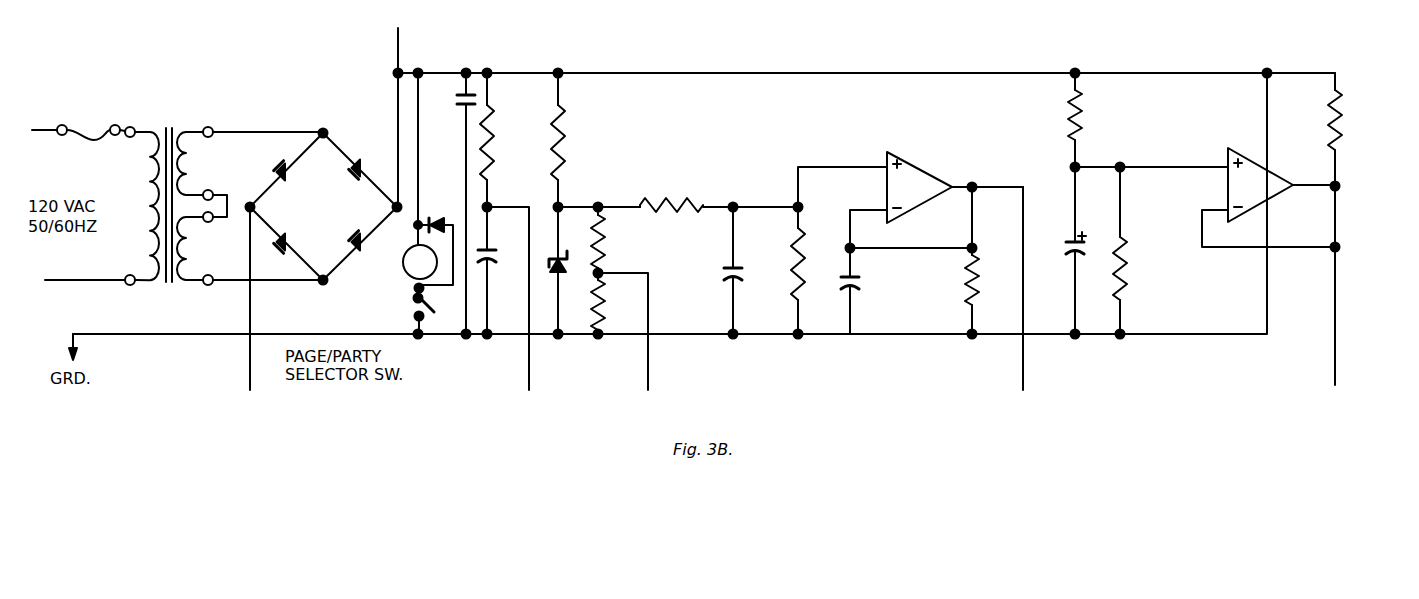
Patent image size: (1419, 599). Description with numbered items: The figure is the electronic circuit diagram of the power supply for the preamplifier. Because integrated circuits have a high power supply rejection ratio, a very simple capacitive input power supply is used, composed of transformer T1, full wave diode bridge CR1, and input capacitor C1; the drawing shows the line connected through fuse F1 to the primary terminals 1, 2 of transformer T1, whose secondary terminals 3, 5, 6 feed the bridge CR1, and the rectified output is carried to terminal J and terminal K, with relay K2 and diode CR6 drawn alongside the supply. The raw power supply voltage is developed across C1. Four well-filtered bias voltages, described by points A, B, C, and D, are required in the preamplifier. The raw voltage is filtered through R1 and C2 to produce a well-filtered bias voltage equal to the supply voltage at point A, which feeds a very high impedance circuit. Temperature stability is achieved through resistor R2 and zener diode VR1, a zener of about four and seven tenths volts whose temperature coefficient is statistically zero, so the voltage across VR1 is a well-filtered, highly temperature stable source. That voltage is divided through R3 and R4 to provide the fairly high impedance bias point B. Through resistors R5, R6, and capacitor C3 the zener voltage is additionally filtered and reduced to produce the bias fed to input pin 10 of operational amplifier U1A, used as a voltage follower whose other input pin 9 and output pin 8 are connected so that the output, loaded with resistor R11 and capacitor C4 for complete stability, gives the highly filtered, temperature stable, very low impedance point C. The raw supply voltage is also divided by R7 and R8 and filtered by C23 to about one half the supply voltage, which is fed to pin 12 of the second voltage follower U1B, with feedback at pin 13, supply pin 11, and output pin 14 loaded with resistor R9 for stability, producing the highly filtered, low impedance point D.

The fuse 1/16A F1 is at (94, 119).
The transformer T1 is at (173, 196).
The transformer primary terminal 1 is at (130, 141).
The transformer primary terminal 2 is at (129, 271).
The transformer secondary terminal 3 is at (208, 122).
The transformer secondary terminal 5 is at (208, 230).
The transformer secondary terminal 6 is at (208, 271).
The full wave diode bridge CR1 is at (324, 207).
The diode CR6 is at (433, 243).
The relay coil and contacts K2 is at (393, 289).
The input capacitor C1 is at (451, 203).
The resistor R1 is at (501, 140).
The capacitor C2 is at (497, 270).
The resistor R2 is at (570, 140).
The zener diode VR1 is at (572, 270).
The resistor R3 is at (612, 240).
The resistor R4 is at (612, 303).
The resistor R5 is at (719, 194).
The capacitor C3 is at (717, 270).
The resistor R6 is at (810, 270).
The operational amplifier U1A is at (910, 196).
The op-amp U1A output pin 8 is at (987, 174).
The op-amp U1A inverting input pin 9 is at (868, 229).
The input pin 10 is at (842, 176).
The capacitor C4 is at (864, 291).
The resistor R11 is at (956, 291).
The resistor R7 is at (1088, 120).
The capacitor C23 is at (1059, 250).
The resistor R8 is at (1132, 250).
The voltage follower U1B is at (1267, 197).
The op-amp U1B supply pin 11 is at (1278, 208).
The op-amp U1B non-inverting input pin 12 is at (1214, 157).
The op-amp U1B inverting input pin 13 is at (1268, 219).
The op-amp U1B output pin 14 is at (1312, 174).
The resistor R9 is at (1318, 129).
The terminal J is at (394, 107).
The terminal K is at (249, 309).
The point A is at (510, 311).
The point B is at (624, 344).
The point C is at (1020, 301).
The point D is at (1334, 299).